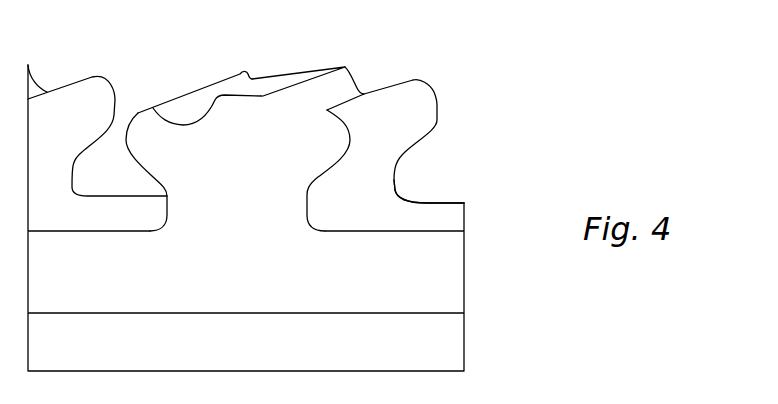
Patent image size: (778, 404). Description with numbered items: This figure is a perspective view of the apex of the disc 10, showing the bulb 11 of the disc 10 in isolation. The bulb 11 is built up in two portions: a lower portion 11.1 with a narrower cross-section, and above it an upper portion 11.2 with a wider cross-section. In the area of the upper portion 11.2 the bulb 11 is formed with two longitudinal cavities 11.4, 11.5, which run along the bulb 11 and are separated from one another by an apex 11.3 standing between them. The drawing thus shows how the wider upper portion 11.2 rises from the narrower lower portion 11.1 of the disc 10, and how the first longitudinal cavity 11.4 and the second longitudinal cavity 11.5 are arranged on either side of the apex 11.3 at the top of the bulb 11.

The disc 10 is at (445, 259).
The bulb 11 is at (413, 108).
The lower portion 11.1 is at (280, 198).
The upper portion 11.2 is at (183, 148).
The apex 11.3 is at (298, 75).
The longitudinal cavity 11.4 is at (195, 104).
The longitudinal cavity 11.5 is at (337, 92).